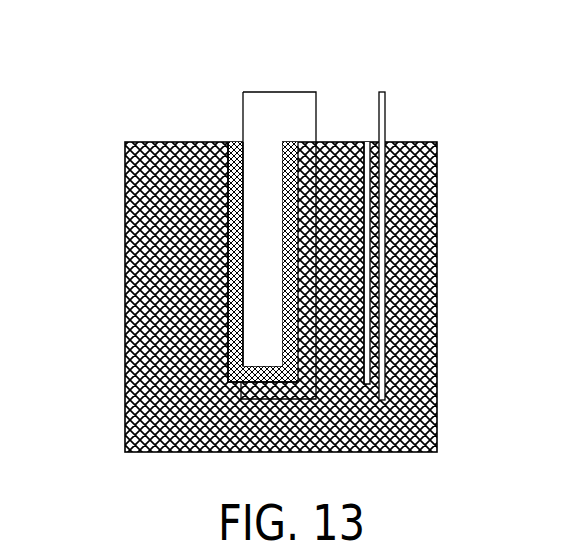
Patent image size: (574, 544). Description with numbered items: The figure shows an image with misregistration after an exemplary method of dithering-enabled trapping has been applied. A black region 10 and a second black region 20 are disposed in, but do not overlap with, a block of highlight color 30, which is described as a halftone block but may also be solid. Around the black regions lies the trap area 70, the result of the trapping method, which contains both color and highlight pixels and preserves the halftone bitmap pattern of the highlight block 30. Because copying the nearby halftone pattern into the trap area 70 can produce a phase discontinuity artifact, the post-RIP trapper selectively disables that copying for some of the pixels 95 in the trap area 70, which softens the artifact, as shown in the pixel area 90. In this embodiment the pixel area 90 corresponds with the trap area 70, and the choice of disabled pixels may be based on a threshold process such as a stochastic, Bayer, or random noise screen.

The black region 10 is at (282, 92).
The black region 20 is at (387, 120).
The block of highlight color 30 is at (417, 413).
The trap area 70 is at (309, 148).
The pixel area 90 is at (363, 202).
The pixels 95 is at (225, 298).